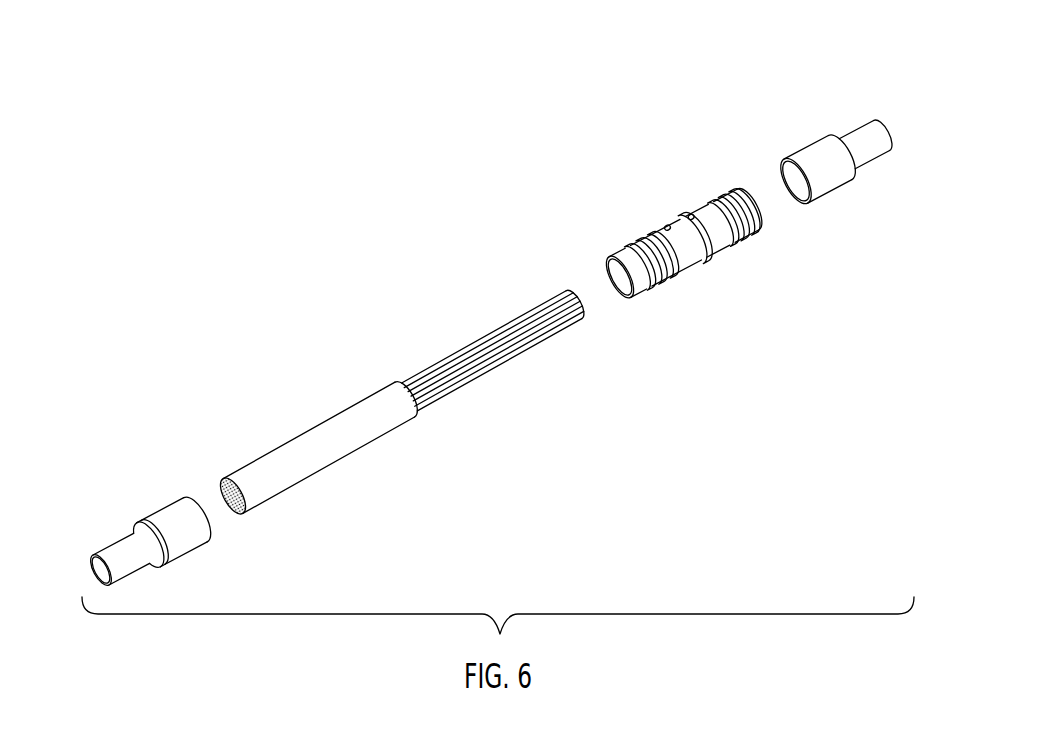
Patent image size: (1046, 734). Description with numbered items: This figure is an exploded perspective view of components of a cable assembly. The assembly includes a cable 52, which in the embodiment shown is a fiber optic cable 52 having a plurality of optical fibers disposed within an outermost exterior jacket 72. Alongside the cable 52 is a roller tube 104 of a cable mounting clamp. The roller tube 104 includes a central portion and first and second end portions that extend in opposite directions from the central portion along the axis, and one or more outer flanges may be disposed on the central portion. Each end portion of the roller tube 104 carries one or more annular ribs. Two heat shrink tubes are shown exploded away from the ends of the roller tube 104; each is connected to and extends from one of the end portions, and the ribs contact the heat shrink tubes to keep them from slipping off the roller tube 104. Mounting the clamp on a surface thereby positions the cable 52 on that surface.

The cable 52 is at (401, 388).
The outermost exterior jacket 72 is at (318, 442).
The roller tube 104 is at (689, 227).